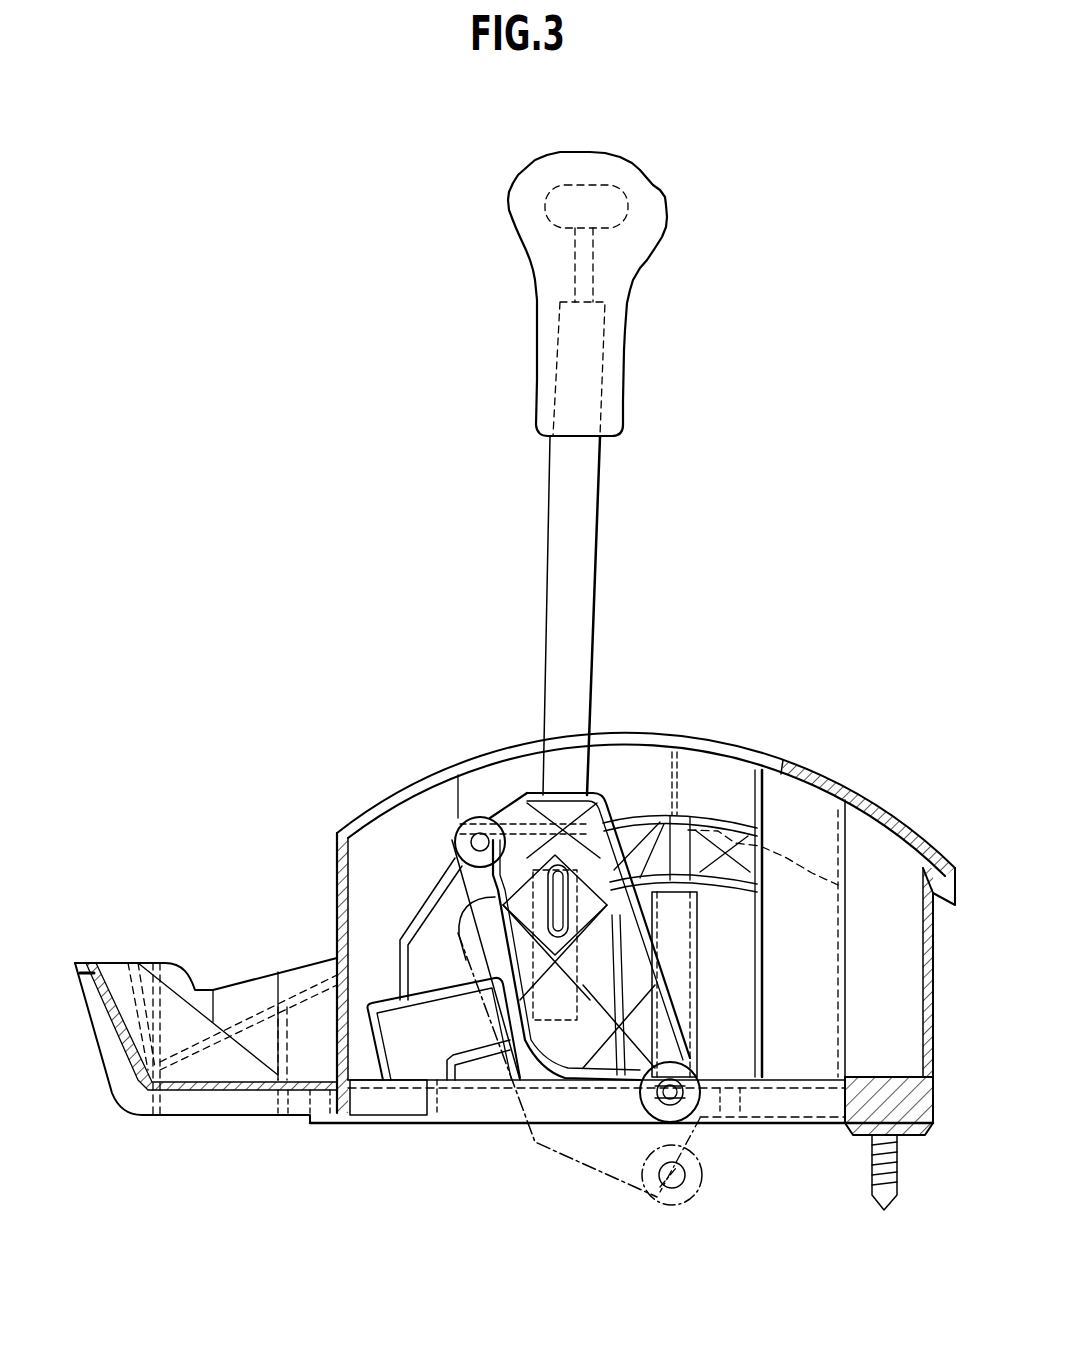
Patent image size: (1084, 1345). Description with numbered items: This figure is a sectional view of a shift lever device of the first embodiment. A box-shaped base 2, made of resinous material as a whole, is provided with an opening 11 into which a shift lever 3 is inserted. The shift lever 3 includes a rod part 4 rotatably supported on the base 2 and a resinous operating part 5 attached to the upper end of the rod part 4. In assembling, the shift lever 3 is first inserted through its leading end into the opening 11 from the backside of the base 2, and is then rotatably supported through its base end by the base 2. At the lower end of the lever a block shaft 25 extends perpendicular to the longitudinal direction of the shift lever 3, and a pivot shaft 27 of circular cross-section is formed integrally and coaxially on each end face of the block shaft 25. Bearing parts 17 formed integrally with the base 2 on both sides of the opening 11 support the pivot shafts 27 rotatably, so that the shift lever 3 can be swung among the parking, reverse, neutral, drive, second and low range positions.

The base 2 is at (843, 800).
The shift lever 3 is at (570, 616).
The rod part 4 is at (583, 548).
The operating part 5 is at (545, 338).
The opening 11 is at (800, 1110).
The bearing part 17 is at (688, 1122).
The block shaft 25 is at (688, 1187).
The pivot shaft 27 is at (657, 1200).